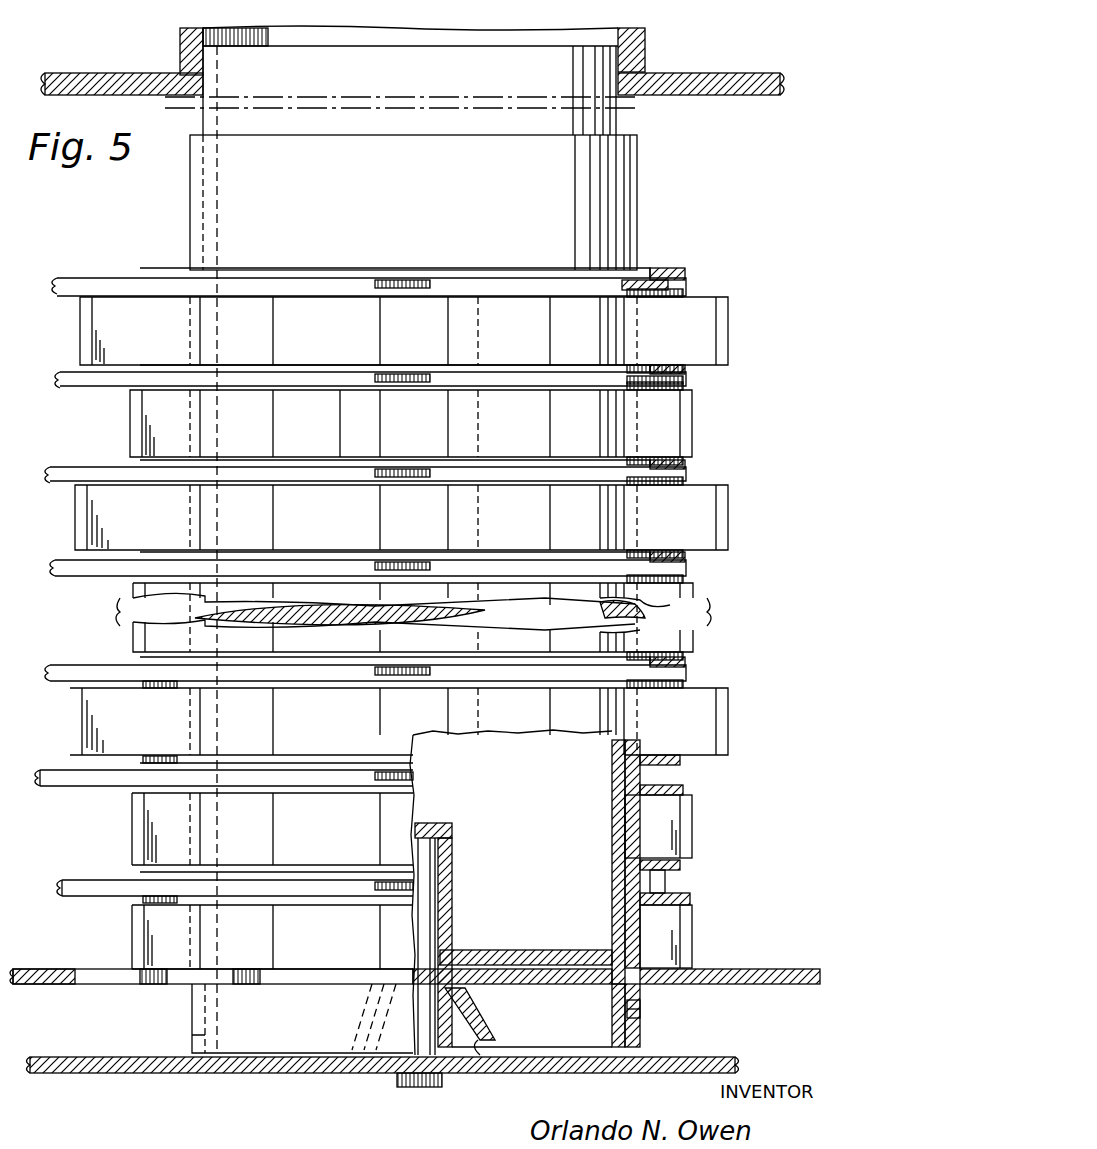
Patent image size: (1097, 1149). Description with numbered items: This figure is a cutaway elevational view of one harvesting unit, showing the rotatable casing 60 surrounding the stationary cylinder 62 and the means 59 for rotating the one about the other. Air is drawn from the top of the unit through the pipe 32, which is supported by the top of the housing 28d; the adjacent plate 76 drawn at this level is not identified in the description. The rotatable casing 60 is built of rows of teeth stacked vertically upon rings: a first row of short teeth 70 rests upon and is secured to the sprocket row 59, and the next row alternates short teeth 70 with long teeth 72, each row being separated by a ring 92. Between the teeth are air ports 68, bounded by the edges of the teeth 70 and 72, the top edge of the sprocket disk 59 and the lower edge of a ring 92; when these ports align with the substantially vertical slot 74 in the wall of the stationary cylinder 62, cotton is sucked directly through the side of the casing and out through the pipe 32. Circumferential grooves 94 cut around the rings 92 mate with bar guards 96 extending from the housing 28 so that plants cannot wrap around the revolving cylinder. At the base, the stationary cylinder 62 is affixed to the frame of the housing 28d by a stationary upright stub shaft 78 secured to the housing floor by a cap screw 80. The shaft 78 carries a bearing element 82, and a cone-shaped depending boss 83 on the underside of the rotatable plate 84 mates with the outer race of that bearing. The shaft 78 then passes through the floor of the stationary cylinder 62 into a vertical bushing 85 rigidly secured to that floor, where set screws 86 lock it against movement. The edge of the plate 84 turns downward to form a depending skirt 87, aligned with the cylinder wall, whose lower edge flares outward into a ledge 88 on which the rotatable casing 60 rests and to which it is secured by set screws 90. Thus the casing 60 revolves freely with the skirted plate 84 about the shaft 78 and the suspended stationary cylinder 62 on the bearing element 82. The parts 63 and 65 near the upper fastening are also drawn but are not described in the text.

The housing 28d is at (135, 73).
The pipe 32 is at (647, 52).
The frame plate 76 is at (632, 72).
The stationary cylinder 62 is at (632, 122).
The rotatable casing 60 is at (632, 190).
The nut 63 is at (657, 270).
The washer 65 is at (668, 285).
The air ports 68 is at (533, 344).
The circumferential grooves 94 is at (680, 381).
The ring 92 is at (690, 384).
The vertical slot opening 74 is at (480, 424).
The bar guards 96 is at (88, 388).
The long teeth 72 is at (707, 532).
The short teeth 70 is at (692, 916).
The sprocket row 59 is at (766, 969).
The set screws 86 is at (453, 876).
The vertical bushing 85 is at (455, 922).
The stationary upright stub shaft 78 is at (456, 963).
The depending skirt 87 is at (612, 1012).
The rotatable plate 84 is at (528, 988).
The set screws 90 is at (642, 1010).
The ledge 88 is at (642, 1046).
The bearing element 82 is at (474, 1075).
The depending boss 83 is at (492, 1042).
The cap screw 80 is at (412, 1088).
The housing 28 is at (379, 1076).